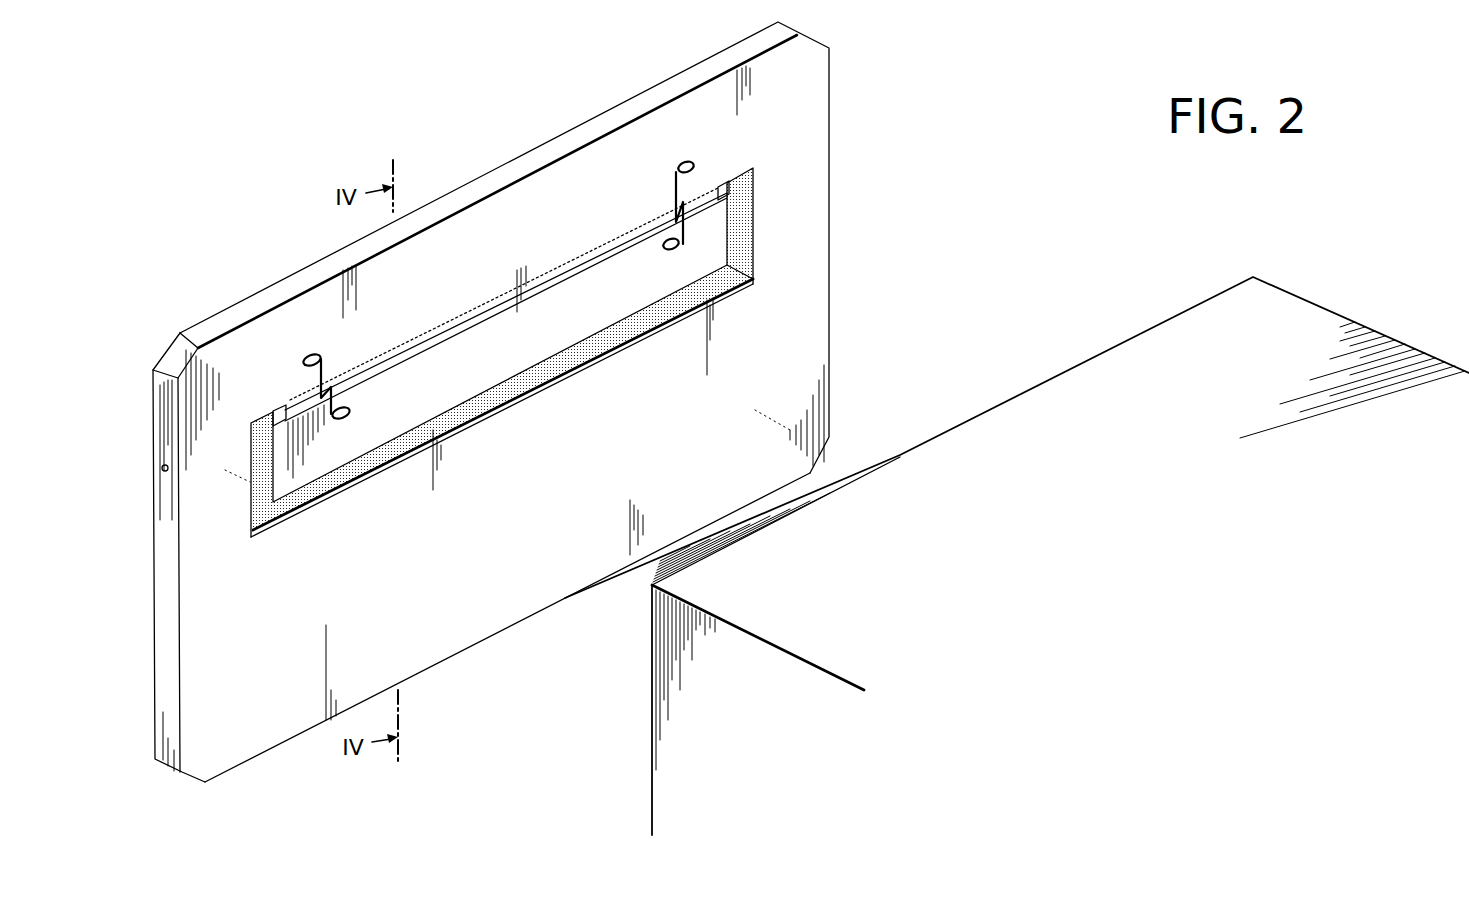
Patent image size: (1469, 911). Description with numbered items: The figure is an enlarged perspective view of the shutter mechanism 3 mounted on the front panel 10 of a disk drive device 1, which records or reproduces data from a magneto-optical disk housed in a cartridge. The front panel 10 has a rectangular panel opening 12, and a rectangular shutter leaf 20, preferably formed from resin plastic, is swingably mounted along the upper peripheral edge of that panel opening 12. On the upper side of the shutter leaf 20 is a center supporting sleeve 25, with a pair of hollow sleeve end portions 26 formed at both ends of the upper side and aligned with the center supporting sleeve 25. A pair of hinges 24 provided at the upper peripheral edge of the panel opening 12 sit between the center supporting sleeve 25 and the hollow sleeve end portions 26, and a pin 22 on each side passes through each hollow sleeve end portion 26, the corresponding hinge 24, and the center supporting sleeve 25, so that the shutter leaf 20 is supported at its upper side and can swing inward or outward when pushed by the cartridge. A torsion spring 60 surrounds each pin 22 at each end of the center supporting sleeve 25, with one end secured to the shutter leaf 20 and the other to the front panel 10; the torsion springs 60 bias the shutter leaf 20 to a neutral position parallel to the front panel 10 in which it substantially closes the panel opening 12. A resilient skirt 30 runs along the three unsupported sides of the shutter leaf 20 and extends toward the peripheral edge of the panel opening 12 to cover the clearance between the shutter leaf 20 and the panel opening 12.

The disk drive device 1 is at (1050, 386).
The shutter mechanism 3 is at (868, 126).
The front panel 10 is at (498, 618).
The panel opening 12 is at (750, 291).
The shutter leaf 20 is at (458, 350).
The pin 22 is at (633, 233).
The hinge 24 is at (706, 190).
The center supporting sleeve 25 is at (550, 275).
The hollow sleeve end portion 26 is at (727, 179).
The resilient skirt 30 is at (543, 373).
The torsion spring 60 is at (675, 188).